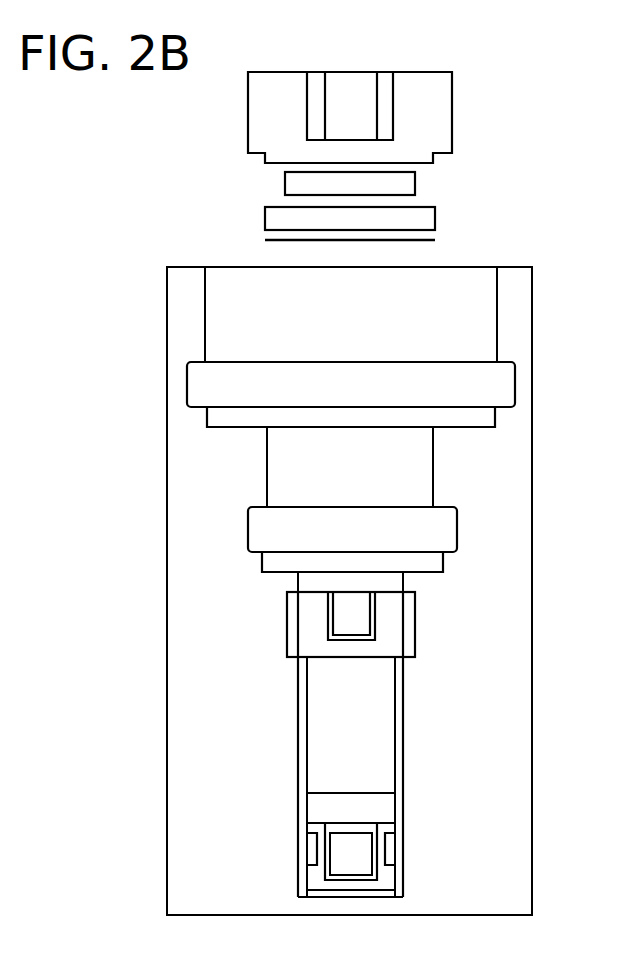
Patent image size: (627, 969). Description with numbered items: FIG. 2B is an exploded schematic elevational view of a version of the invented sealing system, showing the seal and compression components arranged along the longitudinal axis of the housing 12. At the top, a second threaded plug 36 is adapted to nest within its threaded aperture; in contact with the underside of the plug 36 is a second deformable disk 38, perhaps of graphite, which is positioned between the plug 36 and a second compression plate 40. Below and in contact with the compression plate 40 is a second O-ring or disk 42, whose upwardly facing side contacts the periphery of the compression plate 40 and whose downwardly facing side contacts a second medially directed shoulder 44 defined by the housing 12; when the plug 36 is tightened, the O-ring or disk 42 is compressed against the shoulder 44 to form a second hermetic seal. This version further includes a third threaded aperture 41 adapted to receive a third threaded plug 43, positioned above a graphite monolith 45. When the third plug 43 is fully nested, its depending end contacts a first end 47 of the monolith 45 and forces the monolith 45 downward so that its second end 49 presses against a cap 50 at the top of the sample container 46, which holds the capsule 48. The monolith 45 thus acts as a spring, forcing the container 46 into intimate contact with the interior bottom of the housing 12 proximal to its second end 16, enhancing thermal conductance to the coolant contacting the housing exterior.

The housing 12 is at (158, 272).
The second end 16 is at (238, 913).
The second threaded plug 36 is at (420, 100).
The second deformable disk 38 is at (405, 183).
The second compression plate 40 is at (278, 220).
The second O-ring or disk 42 is at (430, 238).
The third threaded aperture 41 is at (288, 598).
The third threaded plug 43 is at (390, 637).
The second medially directed shoulder 44 is at (413, 573).
The graphite monolith 45 is at (369, 734).
The sample container 46 is at (312, 880).
The first end of the monolith 47 is at (387, 673).
The capsule 48 is at (367, 870).
The second end of the monolith 49 is at (383, 788).
The cap 50 is at (370, 808).